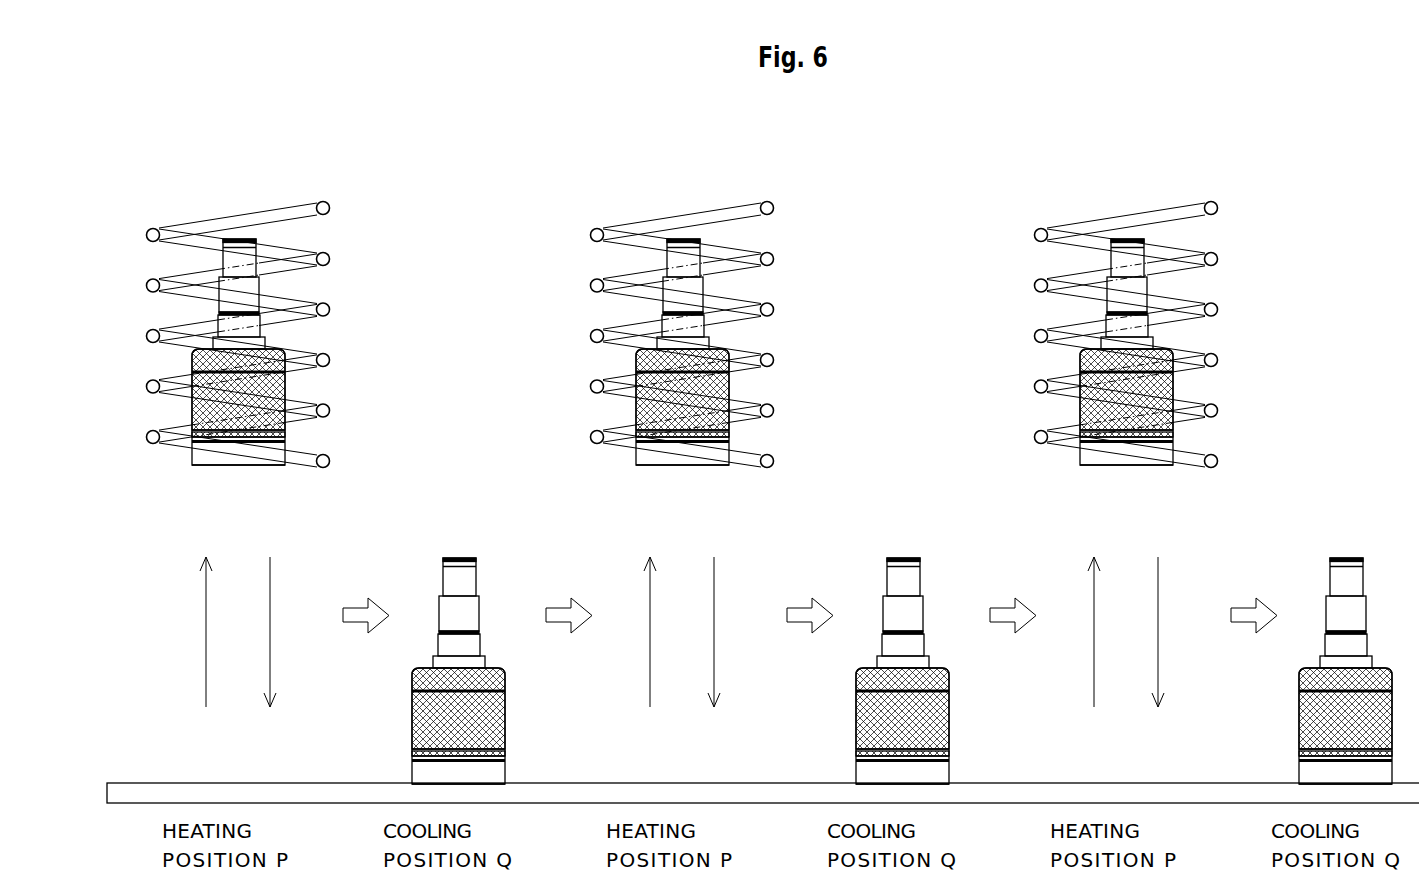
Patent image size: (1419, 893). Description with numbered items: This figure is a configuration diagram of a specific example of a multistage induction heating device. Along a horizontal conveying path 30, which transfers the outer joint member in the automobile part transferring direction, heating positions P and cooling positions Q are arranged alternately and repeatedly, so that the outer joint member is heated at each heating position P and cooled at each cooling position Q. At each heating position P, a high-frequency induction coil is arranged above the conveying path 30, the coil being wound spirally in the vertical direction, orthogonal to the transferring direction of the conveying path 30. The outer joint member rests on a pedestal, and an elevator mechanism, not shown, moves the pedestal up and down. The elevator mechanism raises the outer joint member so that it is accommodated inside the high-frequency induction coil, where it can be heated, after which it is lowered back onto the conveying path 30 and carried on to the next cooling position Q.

The conveying path 30 is at (746, 795).